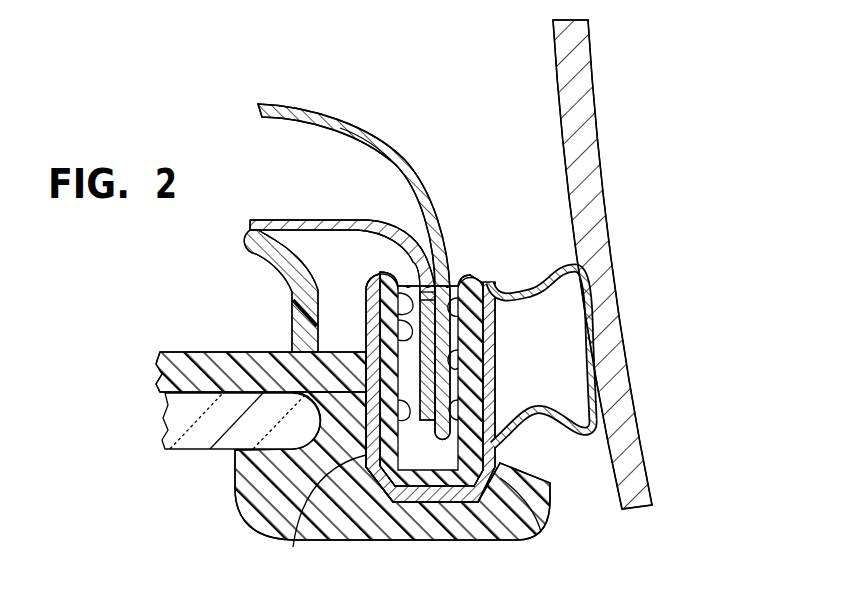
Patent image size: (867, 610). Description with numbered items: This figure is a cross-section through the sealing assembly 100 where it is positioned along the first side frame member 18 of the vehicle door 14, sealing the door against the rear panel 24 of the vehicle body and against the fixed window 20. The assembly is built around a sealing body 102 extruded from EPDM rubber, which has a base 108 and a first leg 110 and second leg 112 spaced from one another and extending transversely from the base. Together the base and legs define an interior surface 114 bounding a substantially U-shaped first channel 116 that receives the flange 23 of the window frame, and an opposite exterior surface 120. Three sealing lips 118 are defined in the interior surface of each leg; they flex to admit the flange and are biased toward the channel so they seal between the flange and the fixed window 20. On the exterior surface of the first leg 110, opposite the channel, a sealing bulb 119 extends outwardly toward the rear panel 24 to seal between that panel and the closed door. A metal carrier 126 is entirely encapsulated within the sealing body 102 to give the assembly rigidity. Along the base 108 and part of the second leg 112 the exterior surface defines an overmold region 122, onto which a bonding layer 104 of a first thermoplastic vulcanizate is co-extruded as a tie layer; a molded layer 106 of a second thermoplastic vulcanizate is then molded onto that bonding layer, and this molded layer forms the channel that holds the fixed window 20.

The vehicle door 14 is at (328, 104).
The first side frame member 18 is at (378, 140).
The fixed window 20 is at (190, 441).
The flange 23 is at (456, 276).
The rear panel 24 is at (596, 200).
The sealing assembly 100 is at (492, 197).
The sealing body 102 is at (493, 445).
The bonding layer 104 is at (437, 500).
The molded layer 106 is at (530, 523).
The base 108 is at (410, 500).
The first leg 110 is at (512, 295).
The second leg 112 is at (367, 337).
The interior surface 114 is at (372, 302).
The first channel 116 is at (295, 541).
The sealing lip 118 is at (418, 275).
The sealing bulb 119 is at (597, 258).
The exterior surface 120 is at (300, 371).
The overmold region 122 is at (545, 522).
The carrier 126 is at (488, 276).